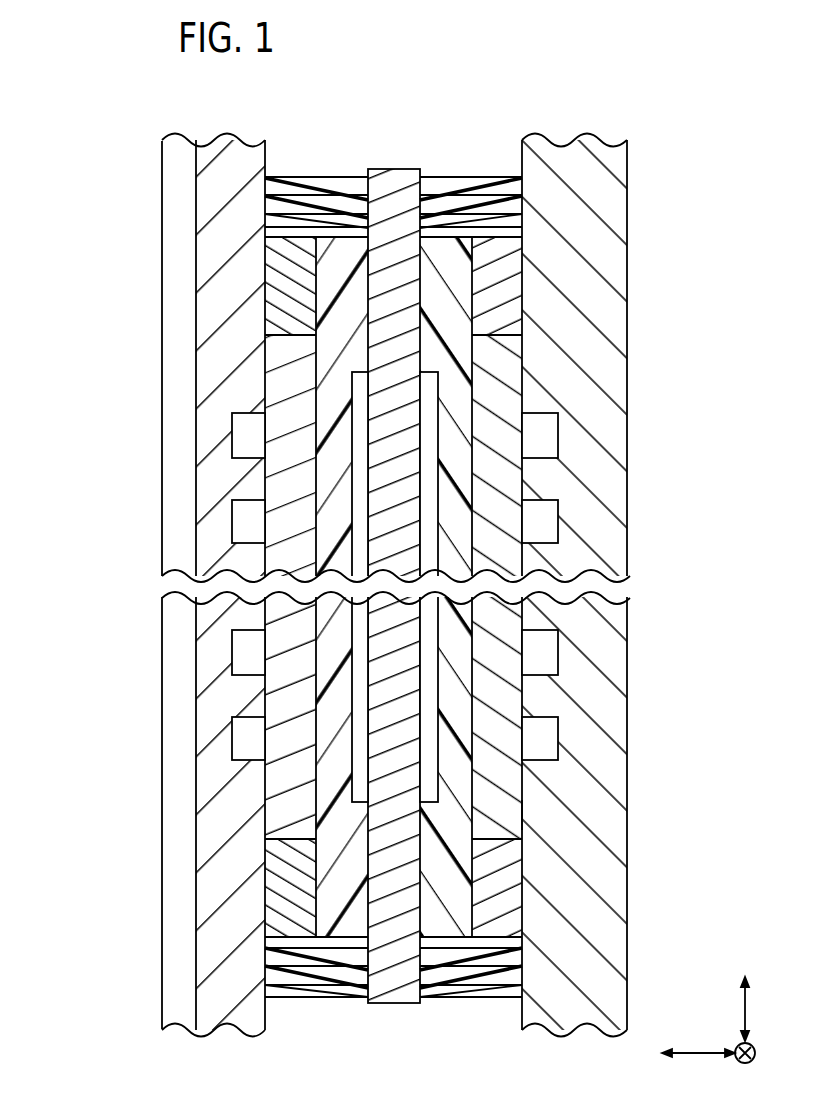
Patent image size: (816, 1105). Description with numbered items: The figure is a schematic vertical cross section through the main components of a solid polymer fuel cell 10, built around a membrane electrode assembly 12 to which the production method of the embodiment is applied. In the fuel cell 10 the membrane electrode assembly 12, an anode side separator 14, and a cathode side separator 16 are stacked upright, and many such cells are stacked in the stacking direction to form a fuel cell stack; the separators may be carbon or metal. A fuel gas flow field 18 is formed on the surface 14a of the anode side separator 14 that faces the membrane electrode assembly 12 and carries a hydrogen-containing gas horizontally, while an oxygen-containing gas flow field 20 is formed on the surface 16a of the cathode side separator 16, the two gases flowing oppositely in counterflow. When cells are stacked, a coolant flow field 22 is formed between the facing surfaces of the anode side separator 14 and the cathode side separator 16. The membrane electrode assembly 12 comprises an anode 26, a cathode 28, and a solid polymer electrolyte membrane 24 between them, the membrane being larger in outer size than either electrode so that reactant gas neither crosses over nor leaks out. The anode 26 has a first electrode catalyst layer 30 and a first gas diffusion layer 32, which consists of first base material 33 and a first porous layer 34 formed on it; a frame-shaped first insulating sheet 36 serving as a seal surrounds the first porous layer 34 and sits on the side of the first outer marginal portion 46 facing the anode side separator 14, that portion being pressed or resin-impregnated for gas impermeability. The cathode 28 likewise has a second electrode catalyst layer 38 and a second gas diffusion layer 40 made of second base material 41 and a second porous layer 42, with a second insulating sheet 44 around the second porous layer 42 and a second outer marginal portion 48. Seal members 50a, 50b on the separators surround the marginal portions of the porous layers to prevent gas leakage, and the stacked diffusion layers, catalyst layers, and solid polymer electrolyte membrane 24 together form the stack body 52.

The solid polymer fuel cell 10 is at (633, 62).
The membrane electrode assembly 12 is at (413, 137).
The anode side separator 14 is at (598, 168).
The surface of the anode side separator 14a is at (522, 150).
The cathode side separator 16 is at (203, 162).
The surface of the cathode side separator 16a is at (265, 157).
The fuel gas flow field 18 is at (550, 743).
The oxygen-containing gas flow field 20 is at (234, 755).
The coolant flow field 22 is at (162, 223).
The solid polymer electrolyte membrane 24 is at (383, 168).
The anode 26 is at (736, 398).
The cathode 28 is at (58, 398).
The first electrode catalyst layer 30 is at (430, 515).
The first gas diffusion layer 32 is at (688, 373).
The first base material 33 is at (490, 400).
The first porous layer 34 is at (460, 427).
The first insulating sheet 36 is at (530, 300).
The second electrode catalyst layer 38 is at (352, 517).
The second gas diffusion layer 40 is at (104, 373).
The second base material 41 is at (297, 400).
The second porous layer 42 is at (318, 420).
The second insulating sheet 44 is at (280, 263).
The first outer marginal portion 46 is at (453, 255).
The second outer marginal portion 48 is at (330, 282).
The seal member 50a is at (463, 988).
The seal member 50b is at (324, 990).
The stack body 52 is at (529, 811).